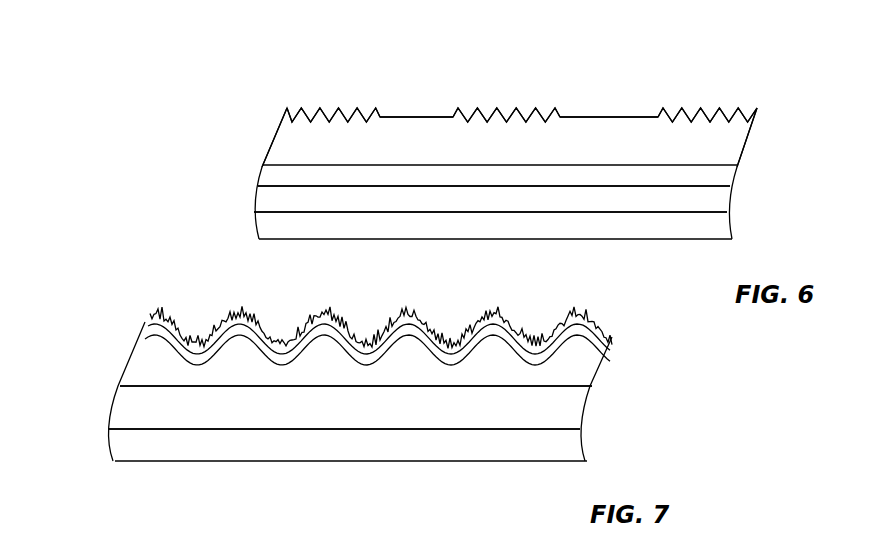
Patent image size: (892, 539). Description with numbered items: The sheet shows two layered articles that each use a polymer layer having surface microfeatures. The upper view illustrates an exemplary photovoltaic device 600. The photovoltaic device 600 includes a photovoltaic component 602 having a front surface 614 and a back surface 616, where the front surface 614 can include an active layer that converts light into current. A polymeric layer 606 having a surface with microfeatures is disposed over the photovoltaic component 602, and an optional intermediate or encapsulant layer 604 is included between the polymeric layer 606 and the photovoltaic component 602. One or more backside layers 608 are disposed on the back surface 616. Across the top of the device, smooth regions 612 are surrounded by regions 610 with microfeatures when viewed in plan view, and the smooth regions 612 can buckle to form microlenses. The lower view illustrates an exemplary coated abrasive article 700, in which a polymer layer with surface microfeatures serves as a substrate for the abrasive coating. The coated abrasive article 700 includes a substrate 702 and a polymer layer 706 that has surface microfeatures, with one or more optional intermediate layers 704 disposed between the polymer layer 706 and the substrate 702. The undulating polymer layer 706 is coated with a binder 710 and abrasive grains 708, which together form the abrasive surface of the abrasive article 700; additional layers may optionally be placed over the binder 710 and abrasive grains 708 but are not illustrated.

In FIG. 6, the photovoltaic device 600 is at (220, 112).
In FIG. 6, the photovoltaic component 602 is at (717, 195).
In FIG. 6, the encapsulant layer 604 is at (720, 175).
In FIG. 6, the polymeric layer 606 is at (735, 148).
In FIG. 6, the backside layers 608 is at (718, 225).
In FIG. 6, the regions with microfeatures 610 is at (300, 100).
In FIG. 6, the smooth regions 612 is at (425, 108).
In FIG. 6, the front surface 614 is at (285, 185).
In FIG. 6, the back surface 616 is at (292, 212).
In FIG. 7, the coated abrasive article 700 is at (94, 359).
In FIG. 7, the substrate 702 is at (572, 447).
In FIG. 7, the intermediate layers 704 is at (573, 407).
In FIG. 7, the polymer layer 706 is at (595, 352).
In FIG. 7, the abrasive grains 708 is at (610, 293).
In FIG. 7, the binder 710 is at (145, 333).